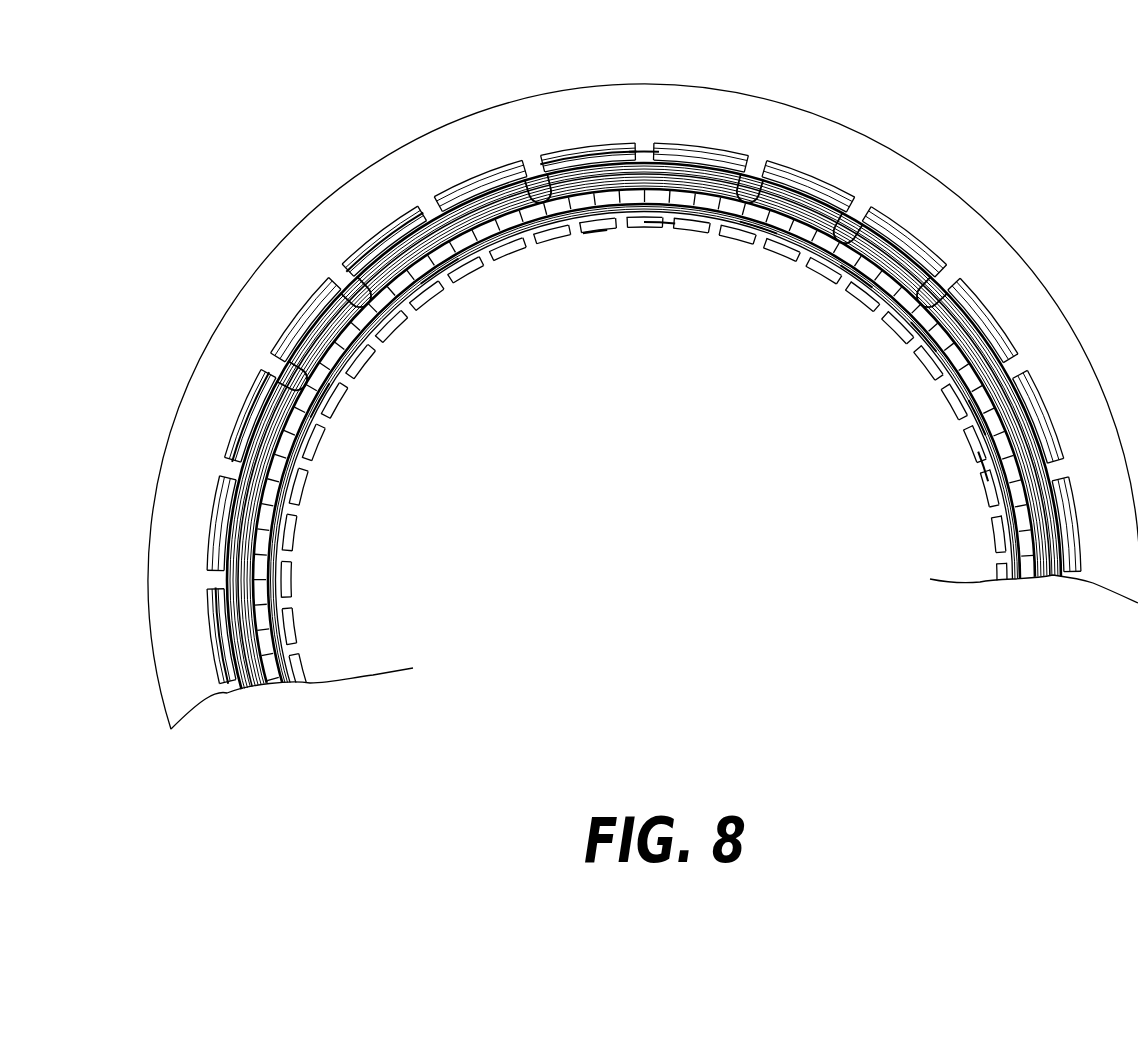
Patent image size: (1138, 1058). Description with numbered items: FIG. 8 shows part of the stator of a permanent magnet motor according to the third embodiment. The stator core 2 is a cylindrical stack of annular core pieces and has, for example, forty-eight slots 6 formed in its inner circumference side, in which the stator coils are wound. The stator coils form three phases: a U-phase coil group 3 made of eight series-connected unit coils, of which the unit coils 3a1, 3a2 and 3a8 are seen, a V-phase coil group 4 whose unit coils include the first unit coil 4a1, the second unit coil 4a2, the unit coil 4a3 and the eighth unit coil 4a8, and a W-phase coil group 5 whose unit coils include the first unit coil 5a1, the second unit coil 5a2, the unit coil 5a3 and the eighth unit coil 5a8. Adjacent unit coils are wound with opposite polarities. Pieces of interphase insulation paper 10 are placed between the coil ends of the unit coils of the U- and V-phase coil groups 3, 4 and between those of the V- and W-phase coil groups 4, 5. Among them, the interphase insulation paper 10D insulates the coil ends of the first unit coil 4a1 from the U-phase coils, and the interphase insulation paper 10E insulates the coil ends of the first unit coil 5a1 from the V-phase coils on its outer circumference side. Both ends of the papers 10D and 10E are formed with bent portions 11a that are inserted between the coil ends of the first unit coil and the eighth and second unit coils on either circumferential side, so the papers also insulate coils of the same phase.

The stator core 2 is at (878, 168).
The U-phase coil group 3 is at (745, 118).
The unit coil 3a1 is at (268, 358).
The unit coil 3a2 is at (373, 238).
The unit coil 3a8 is at (213, 628).
The V-phase coil group 4 is at (1020, 360).
The first unit coil 4a1 is at (520, 165).
The second unit coil 4a2 is at (562, 150).
The unit coil 4a3 is at (850, 278).
The eighth unit coil 4a8 is at (322, 395).
The W-phase coil group 5 is at (980, 463).
The first unit coil 5a1 is at (663, 230).
The second unit coil 5a2 is at (760, 228).
The unit coil 5a3 is at (975, 413).
The eighth unit coil 5a8 is at (443, 270).
The slot 6 is at (643, 147).
The interphase insulation paper 10 is at (943, 273).
The interphase insulation paper 10D is at (343, 280).
The interphase insulation paper 10E is at (593, 235).
The bent portion 11a is at (553, 240).